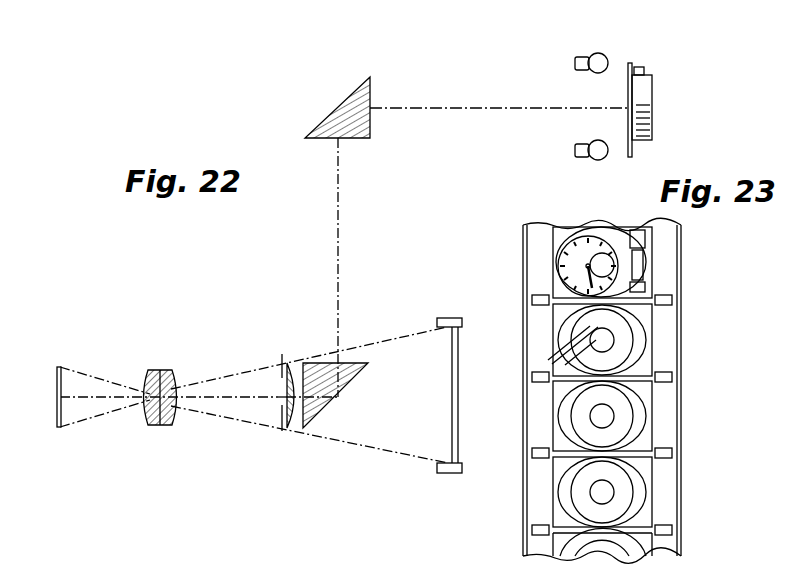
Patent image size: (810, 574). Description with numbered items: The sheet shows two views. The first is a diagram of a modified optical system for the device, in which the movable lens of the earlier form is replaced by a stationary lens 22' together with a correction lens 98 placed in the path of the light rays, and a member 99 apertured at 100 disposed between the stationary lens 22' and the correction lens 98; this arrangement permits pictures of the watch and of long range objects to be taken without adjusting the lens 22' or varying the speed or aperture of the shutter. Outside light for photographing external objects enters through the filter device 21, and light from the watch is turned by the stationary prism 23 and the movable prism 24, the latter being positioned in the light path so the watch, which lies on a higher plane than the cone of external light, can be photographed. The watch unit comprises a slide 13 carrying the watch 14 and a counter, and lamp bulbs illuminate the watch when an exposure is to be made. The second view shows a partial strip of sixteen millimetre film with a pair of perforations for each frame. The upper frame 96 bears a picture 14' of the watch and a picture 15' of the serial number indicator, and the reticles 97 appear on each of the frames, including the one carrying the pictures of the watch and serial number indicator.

In FIG. 22, the upper frame 96 is at (57, 412).
In FIG. 23, the upper frame 96 is at (680, 251).
In FIG. 22, the stationary lens 22' is at (166, 379).
In FIG. 22, the apertured member 99 is at (282, 370).
In FIG. 22, the aperture 100 is at (282, 388).
In FIG. 22, the correction lens 98 is at (291, 362).
In FIG. 22, the movable prism 24 is at (352, 379).
In FIG. 22, the filter device 21 is at (458, 343).
In FIG. 22, the stationary prism 23 is at (350, 103).
In FIG. 22, the slide 13 is at (633, 153).
In FIG. 22, the watch 14 is at (666, 103).
In FIG. 23, the picture of the watch 14' is at (601, 247).
In FIG. 23, the picture of the serial number indicator 15' is at (637, 244).
In FIG. 23, the reticles 97 is at (642, 338).